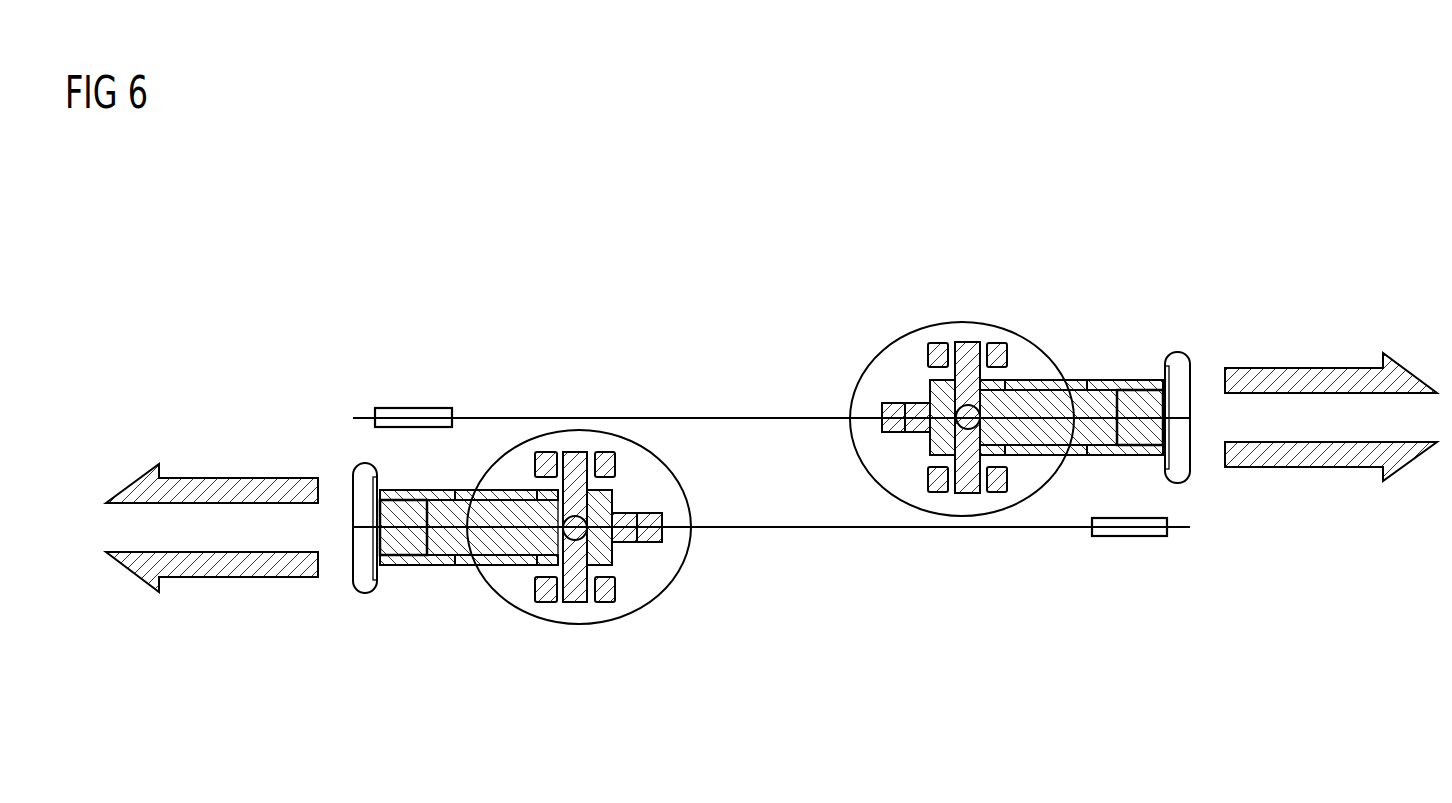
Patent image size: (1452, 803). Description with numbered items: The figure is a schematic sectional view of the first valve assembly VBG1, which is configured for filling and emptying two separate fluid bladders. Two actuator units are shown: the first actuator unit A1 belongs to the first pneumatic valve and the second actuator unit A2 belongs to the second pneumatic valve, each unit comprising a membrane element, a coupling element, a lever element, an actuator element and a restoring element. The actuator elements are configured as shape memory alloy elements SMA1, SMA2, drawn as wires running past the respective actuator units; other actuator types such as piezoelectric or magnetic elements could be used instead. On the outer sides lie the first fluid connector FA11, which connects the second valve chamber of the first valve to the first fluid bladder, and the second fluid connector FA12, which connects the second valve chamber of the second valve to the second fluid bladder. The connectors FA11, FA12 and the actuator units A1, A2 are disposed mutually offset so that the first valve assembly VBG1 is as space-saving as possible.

The first valve assembly VBG1 is at (796, 209).
The first actuator unit A1 is at (476, 637).
The second actuator unit A2 is at (1070, 307).
The shape memory alloy element SMA1 is at (828, 528).
The shape memory alloy element SMA2 is at (716, 416).
The first fluid connector FA11 is at (227, 567).
The second fluid connector FA12 is at (1318, 378).